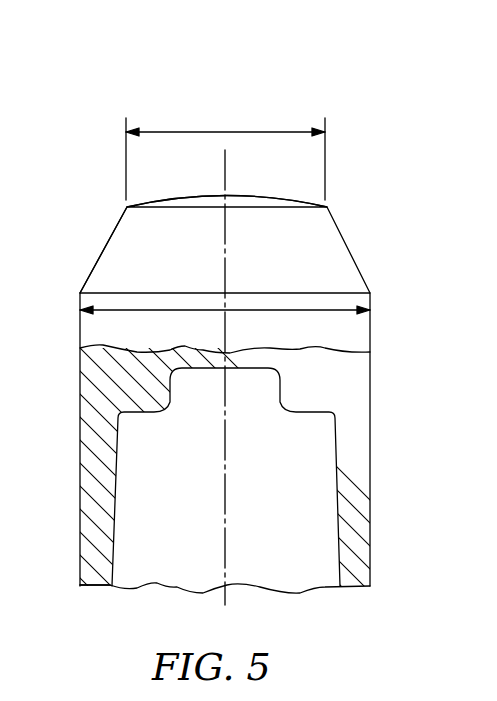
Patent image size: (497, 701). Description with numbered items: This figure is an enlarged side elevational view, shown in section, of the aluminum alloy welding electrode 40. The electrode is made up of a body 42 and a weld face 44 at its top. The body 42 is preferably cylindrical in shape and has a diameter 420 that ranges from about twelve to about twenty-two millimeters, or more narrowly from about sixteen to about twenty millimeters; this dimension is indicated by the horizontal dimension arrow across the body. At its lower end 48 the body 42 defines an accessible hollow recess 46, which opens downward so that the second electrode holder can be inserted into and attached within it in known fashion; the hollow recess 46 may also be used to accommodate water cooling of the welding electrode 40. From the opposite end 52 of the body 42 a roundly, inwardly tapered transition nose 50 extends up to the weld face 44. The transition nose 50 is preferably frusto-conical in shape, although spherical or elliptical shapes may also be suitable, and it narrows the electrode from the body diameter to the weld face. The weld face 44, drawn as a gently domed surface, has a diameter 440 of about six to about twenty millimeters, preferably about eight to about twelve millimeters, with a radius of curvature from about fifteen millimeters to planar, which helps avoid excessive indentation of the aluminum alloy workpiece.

The aluminum alloy welding electrode 40 is at (359, 270).
The body 42 is at (345, 336).
The weld face 44 is at (235, 196).
The hollow recess 46 is at (336, 549).
The end 48 is at (80, 586).
The transition nose 50 is at (112, 236).
The opposite end 52 is at (80, 290).
The diameter 420 is at (133, 313).
The diameter 440 is at (262, 130).